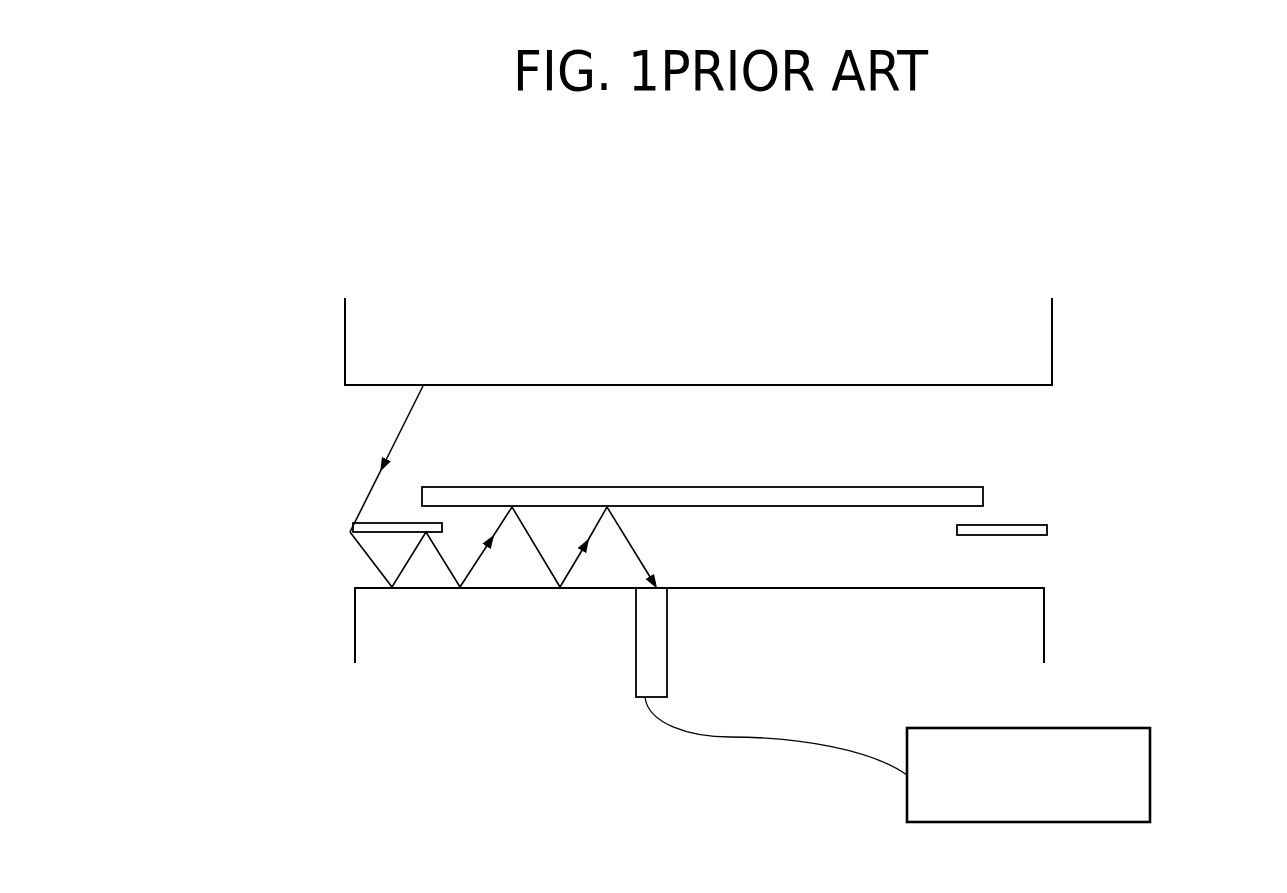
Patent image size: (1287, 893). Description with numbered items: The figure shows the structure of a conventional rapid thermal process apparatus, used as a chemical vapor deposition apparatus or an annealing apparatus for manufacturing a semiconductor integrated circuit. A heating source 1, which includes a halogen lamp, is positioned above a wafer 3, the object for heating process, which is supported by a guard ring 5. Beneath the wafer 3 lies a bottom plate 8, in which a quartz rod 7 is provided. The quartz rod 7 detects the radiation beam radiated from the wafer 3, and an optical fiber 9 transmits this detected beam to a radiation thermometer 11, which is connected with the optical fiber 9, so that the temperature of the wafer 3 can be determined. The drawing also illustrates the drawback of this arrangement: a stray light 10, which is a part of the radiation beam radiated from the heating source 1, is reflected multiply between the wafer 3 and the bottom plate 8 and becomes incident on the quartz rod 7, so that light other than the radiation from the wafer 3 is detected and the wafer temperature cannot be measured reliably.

The heating source 1 is at (1052, 338).
The wafer 3 is at (983, 487).
The guard ring 5 is at (1047, 525).
The quartz rod 7 is at (636, 655).
The bottom plate 8 is at (1044, 622).
The optical fiber 9 is at (728, 737).
The stray light 10 is at (372, 488).
The radiation thermometer 11 is at (1150, 798).